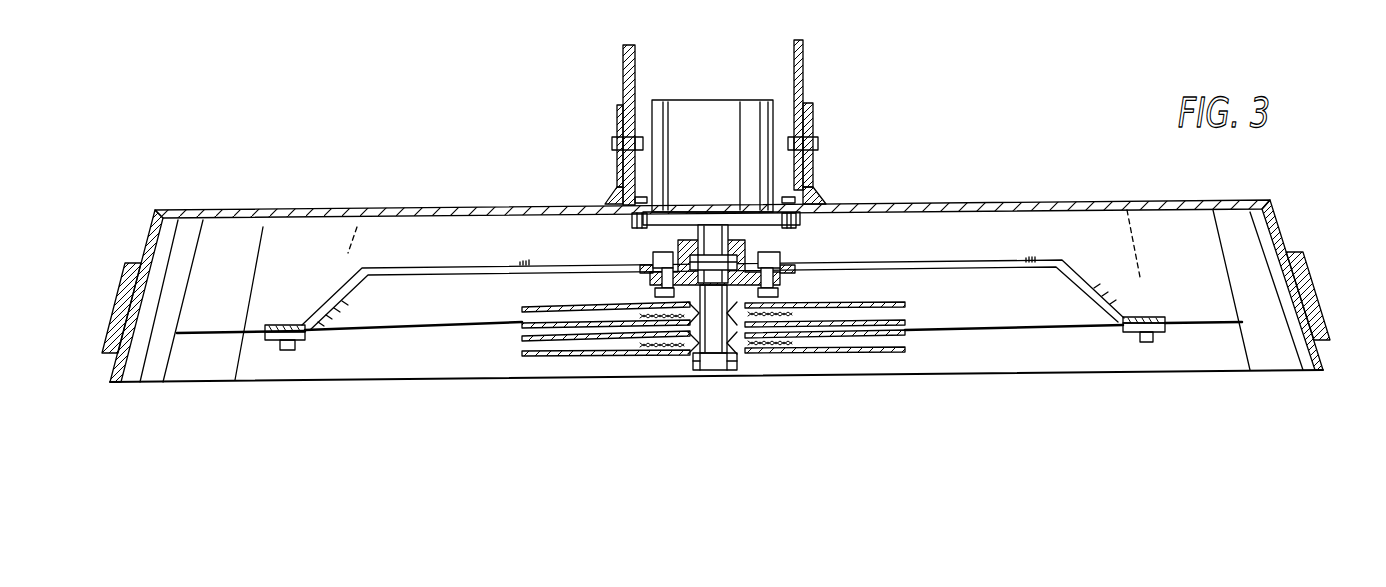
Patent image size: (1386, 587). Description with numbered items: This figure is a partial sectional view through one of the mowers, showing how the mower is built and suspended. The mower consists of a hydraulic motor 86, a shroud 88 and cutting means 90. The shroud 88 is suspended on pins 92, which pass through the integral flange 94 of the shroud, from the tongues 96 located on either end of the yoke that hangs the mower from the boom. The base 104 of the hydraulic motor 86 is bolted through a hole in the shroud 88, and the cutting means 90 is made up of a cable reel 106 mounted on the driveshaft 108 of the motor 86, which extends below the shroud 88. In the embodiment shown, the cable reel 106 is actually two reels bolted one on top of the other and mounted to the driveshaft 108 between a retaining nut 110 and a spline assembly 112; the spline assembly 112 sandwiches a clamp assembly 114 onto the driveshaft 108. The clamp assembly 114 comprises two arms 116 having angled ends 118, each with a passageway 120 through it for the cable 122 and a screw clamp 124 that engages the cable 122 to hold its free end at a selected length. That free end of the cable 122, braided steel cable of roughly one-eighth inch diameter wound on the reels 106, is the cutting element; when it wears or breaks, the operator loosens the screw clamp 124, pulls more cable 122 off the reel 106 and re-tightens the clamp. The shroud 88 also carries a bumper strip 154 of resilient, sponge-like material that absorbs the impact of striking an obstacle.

The hydraulic motor 86 is at (709, 120).
The shroud 88 is at (1070, 203).
The cutting means 90 is at (947, 338).
The pin 92 is at (808, 134).
The integral flange 94 is at (813, 170).
The tongue 96 is at (803, 64).
The base 104 is at (800, 222).
The cable reel 106 is at (588, 304).
The driveshaft 108 is at (700, 344).
The retaining nut 110 is at (741, 370).
The spline assembly 112 is at (786, 259).
The clamp assembly 114 is at (652, 256).
The arm 116 is at (986, 262).
The angled end 118 is at (1137, 317).
The passageway 120 is at (277, 342).
The cable 122 is at (209, 331).
The screw clamp 124 is at (1153, 339).
The bumper strip 154 is at (1310, 263).